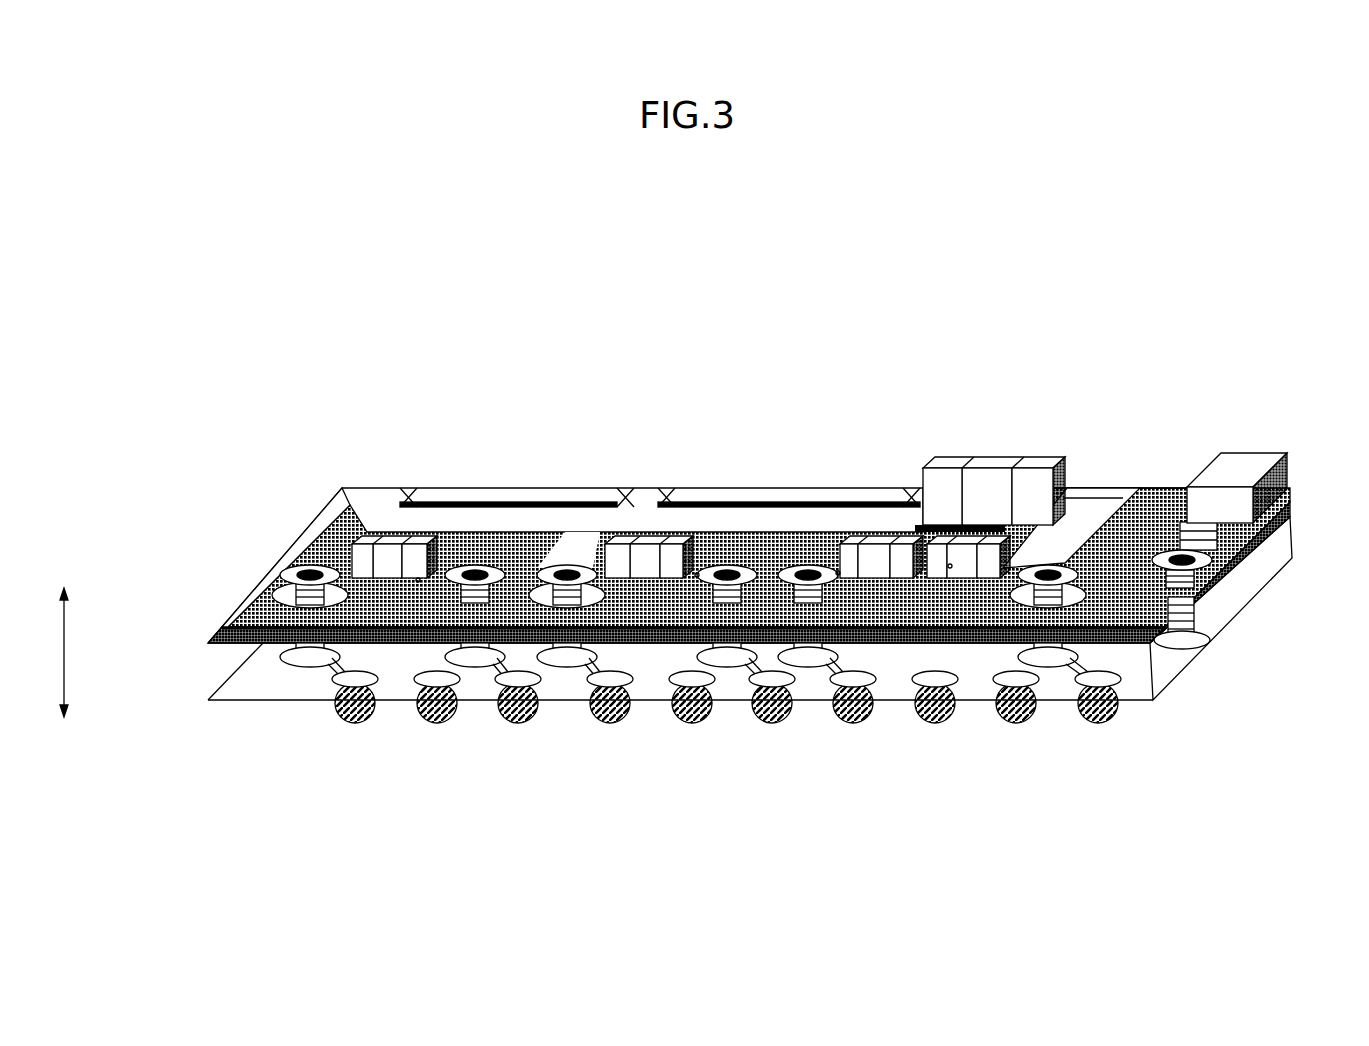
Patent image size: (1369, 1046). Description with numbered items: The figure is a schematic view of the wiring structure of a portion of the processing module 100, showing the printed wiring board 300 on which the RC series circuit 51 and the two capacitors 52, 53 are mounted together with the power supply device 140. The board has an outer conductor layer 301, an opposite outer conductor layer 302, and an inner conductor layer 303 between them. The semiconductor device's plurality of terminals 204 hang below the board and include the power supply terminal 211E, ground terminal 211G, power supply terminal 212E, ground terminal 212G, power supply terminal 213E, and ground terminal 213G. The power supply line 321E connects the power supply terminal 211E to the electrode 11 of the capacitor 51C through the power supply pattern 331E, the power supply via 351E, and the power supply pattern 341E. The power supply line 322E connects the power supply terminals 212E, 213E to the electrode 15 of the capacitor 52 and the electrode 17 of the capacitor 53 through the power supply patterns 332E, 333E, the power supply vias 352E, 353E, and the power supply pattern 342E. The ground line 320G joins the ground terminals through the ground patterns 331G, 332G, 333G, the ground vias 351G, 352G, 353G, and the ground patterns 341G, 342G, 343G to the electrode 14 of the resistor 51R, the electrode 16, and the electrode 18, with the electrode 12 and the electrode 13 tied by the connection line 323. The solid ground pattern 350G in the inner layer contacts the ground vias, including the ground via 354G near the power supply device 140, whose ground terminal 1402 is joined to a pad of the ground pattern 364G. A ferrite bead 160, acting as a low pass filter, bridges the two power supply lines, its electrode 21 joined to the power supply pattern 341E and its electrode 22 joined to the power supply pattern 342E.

The processing module 100 is at (850, 293).
The printed wiring board 300 is at (253, 560).
The conductor layer 301 is at (207, 700).
The conductor layer 302 is at (207, 627).
The conductor layer 303 is at (210, 643).
The ground line 320G is at (262, 653).
The ground pattern 350G is at (257, 613).
The power supply via 353E is at (310, 568).
The ground via 353G is at (473, 568).
The power supply via 352E is at (567, 568).
The ground via 352G is at (727, 568).
The ground via 351G is at (808, 568).
The power supply via 351E is at (1060, 563).
The capacitor 53 is at (376, 497).
The electrode 17 is at (363, 538).
The electrode 18 is at (418, 538).
The capacitor 52 is at (633, 497).
The electrode 15 is at (622, 540).
The electrode 16 is at (676, 540).
The RC series circuit 51 is at (946, 475).
The resistor 51R is at (859, 497).
The capacitor 51C is at (1003, 497).
The electrode 14 is at (847, 540).
The electrode 13 is at (878, 540).
The electrode 12 is at (910, 540).
The electrode 11 is at (1000, 550).
The ferrite bead 160 is at (995, 452).
The electrode 22 is at (952, 460).
The electrode 21 is at (1042, 460).
The power supply pattern 342E is at (395, 497).
The power supply line 322E is at (518, 500).
The power supply line 321E is at (1105, 500).
The power supply pattern 341E is at (1113, 505).
The power supply device 140 is at (1290, 475).
The ground terminal 1402 is at (1230, 508).
The ground pattern 364G is at (1205, 543).
The ground via 354G is at (1222, 560).
The ground pattern 343G is at (418, 580).
The ground pattern 342G is at (697, 575).
The ground pattern 341G is at (838, 573).
The connection line 323 is at (950, 566).
The power supply pattern 333E is at (338, 667).
The ground pattern 333G is at (487, 667).
The power supply pattern 332E is at (592, 668).
The ground pattern 332G is at (745, 672).
The ground pattern 331G is at (823, 672).
The power supply pattern 331E is at (1062, 673).
The power supply terminal 213E is at (357, 723).
The ground terminal 213G is at (520, 723).
The power supply terminal 212E is at (613, 723).
The ground terminal 212G is at (780, 723).
The ground terminal 211G is at (862, 723).
The power supply terminal 211E is at (1093, 723).
The terminals 204 is at (442, 723).